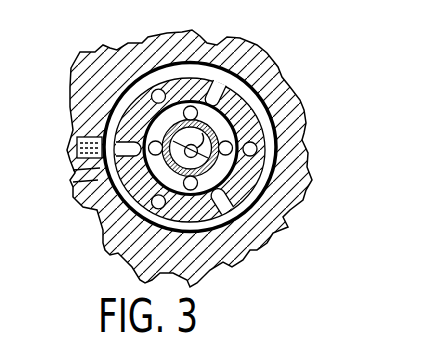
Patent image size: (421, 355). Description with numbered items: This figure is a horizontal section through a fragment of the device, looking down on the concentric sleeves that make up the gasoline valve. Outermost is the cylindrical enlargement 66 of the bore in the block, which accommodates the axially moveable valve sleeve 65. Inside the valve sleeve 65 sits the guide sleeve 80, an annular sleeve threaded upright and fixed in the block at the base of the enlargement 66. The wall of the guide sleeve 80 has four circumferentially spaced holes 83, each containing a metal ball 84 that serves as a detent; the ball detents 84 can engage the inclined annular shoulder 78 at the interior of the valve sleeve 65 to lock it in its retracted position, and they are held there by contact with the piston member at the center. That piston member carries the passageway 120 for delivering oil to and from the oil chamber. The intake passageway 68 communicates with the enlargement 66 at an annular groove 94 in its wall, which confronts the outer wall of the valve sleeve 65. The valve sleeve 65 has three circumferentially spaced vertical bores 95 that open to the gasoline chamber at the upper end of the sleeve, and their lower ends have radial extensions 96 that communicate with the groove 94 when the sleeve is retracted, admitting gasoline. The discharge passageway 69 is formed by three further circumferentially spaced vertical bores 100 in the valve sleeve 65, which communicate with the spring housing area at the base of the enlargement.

The valve sleeve 65 is at (265, 133).
The cylindrical enlargement 66 is at (92, 209).
The intake passageway 68 is at (77, 141).
The discharge passageway 69 is at (257, 151).
The inclined annular shoulder 78 is at (160, 188).
The guide sleeve 80 is at (268, 194).
The holes 83 is at (157, 104).
The ball detents 84 is at (206, 118).
The annular groove 94 is at (100, 173).
The vertical bores 95 is at (111, 104).
The radial extensions 96 is at (222, 84).
The vertical bores 100 is at (149, 72).
The passageway 120 is at (191, 148).